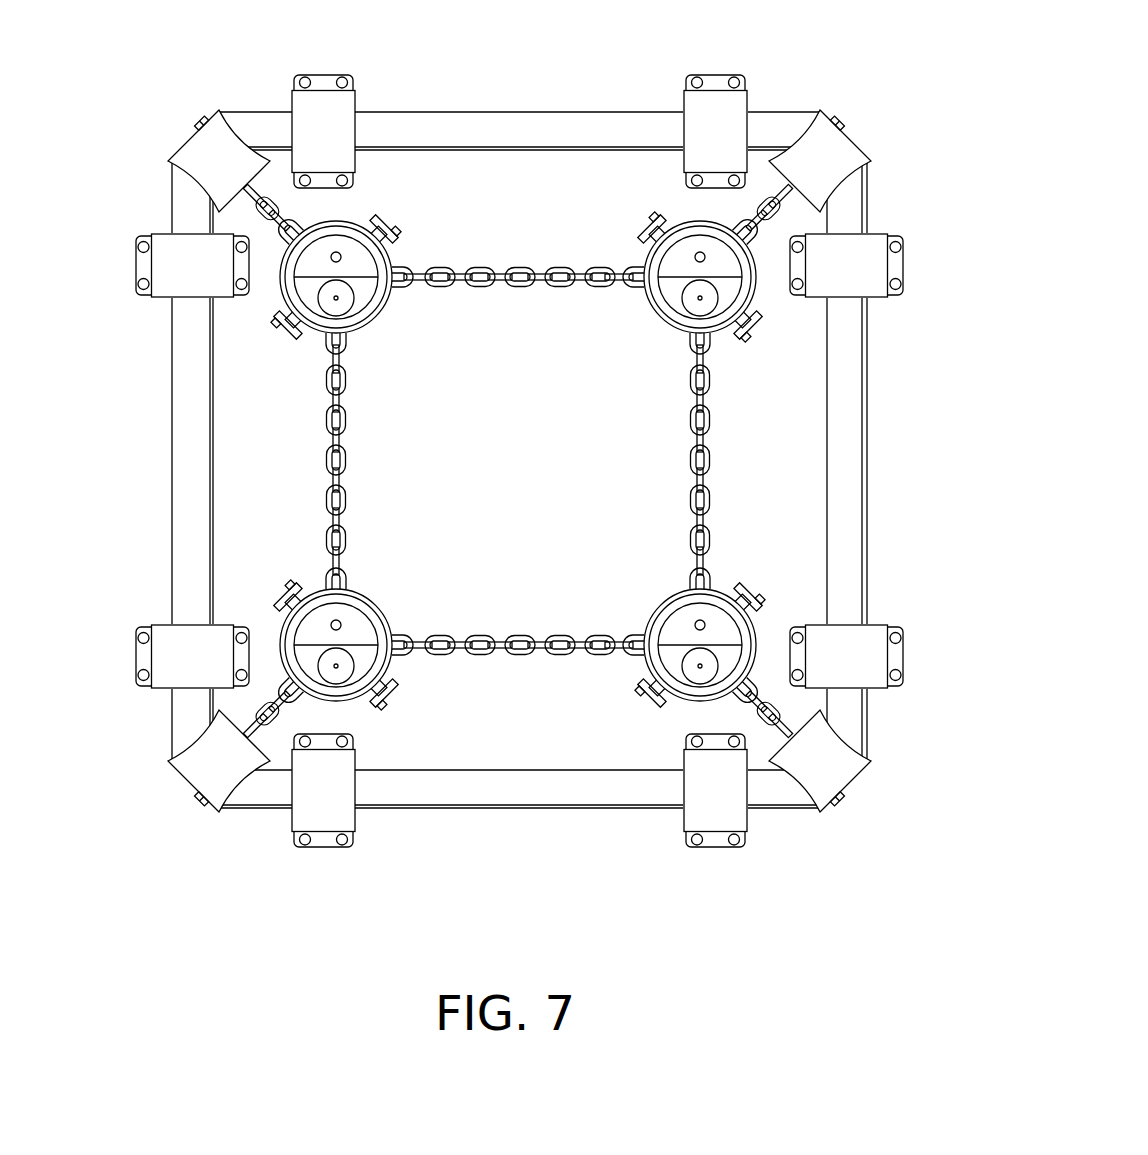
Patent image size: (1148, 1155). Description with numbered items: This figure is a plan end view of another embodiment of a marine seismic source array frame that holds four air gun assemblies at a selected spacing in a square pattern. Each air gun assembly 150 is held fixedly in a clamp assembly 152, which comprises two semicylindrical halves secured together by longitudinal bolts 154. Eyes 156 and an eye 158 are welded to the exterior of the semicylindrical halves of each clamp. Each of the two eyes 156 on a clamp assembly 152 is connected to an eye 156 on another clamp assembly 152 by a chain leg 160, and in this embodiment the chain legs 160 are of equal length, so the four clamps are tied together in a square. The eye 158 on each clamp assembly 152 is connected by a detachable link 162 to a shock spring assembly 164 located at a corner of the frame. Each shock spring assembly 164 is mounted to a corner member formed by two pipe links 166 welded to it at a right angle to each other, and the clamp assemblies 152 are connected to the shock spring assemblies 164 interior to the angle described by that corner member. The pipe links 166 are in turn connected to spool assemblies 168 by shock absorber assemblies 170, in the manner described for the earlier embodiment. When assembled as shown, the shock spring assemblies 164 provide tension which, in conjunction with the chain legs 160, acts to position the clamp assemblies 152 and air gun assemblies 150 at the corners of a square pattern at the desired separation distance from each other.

The air gun assembly 150 is at (367, 285).
The clamp assembly 152 is at (378, 322).
The longitudinal bolt 154 is at (390, 240).
The eye 156 is at (405, 270).
The eye 158 is at (302, 222).
The chain leg 160 is at (563, 290).
The detachable link 162 is at (757, 195).
The shock spring assembly 164 is at (200, 120).
The pipe link 166 is at (262, 120).
The spool assembly 168 is at (517, 125).
The shock absorber assembly 170 is at (340, 112).